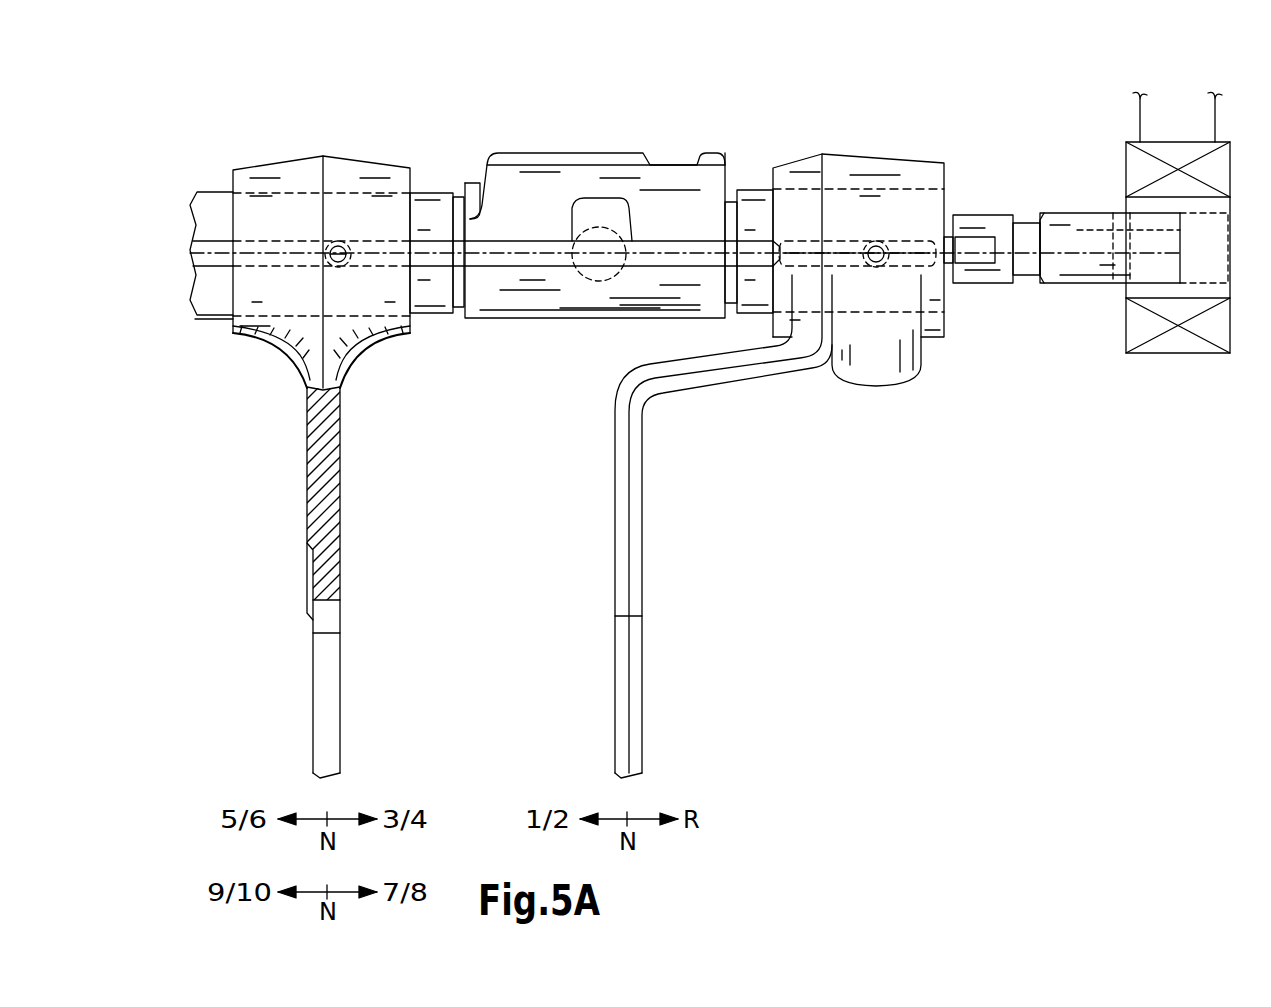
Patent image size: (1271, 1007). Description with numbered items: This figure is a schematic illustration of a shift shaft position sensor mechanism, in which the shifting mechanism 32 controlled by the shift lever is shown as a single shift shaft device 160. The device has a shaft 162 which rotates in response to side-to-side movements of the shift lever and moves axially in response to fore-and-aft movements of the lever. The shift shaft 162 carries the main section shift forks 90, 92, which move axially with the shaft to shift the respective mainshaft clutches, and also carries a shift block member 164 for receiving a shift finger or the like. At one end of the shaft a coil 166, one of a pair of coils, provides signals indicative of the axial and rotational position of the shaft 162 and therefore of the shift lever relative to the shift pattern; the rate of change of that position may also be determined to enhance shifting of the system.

The shifting mechanism 32 is at (450, 104).
The shift fork 90 is at (630, 510).
The shift fork 92 is at (327, 475).
The single shift shaft device 160 is at (872, 125).
The shift shaft 162 is at (210, 292).
The shift block member 164 is at (598, 136).
The coil 166 is at (1188, 372).